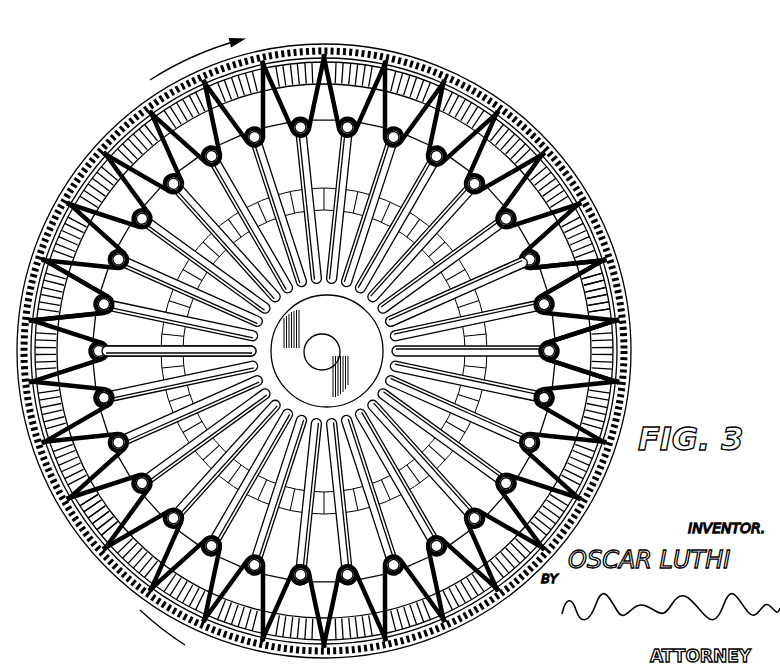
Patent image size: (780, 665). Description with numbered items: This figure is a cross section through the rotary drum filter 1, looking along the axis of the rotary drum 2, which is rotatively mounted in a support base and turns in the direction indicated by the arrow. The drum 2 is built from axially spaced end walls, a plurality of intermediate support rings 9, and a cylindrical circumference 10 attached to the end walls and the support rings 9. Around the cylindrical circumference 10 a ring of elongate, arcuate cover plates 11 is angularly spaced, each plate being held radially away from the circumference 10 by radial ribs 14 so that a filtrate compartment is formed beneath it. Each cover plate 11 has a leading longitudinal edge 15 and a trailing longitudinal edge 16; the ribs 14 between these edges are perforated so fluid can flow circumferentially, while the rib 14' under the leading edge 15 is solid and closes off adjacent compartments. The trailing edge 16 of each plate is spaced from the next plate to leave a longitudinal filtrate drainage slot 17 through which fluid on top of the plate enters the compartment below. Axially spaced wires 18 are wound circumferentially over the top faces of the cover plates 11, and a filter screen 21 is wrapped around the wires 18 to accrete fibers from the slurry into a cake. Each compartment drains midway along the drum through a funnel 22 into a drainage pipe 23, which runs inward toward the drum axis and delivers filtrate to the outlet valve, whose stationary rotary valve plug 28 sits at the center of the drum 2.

The rotary drum filter 1 is at (666, 376).
The rotary drum 2 is at (534, 90).
The intermediate support rings 9 is at (277, 575).
The cylindrical circumference 10 is at (540, 402).
The cover plates 11 is at (548, 172).
The radial ribs 14 is at (331, 351).
The solid rib 14' is at (589, 267).
The leading longitudinal edge 15 is at (95, 528).
The trailing longitudinal edge 16 is at (155, 610).
The filtrate drainage slot 17 is at (63, 428).
The wires 18 is at (600, 305).
The filter screen 21 is at (472, 58).
The funnel 22 is at (562, 344).
The drainage pipe 23 is at (517, 283).
The rotary valve plug 28 is at (340, 350).